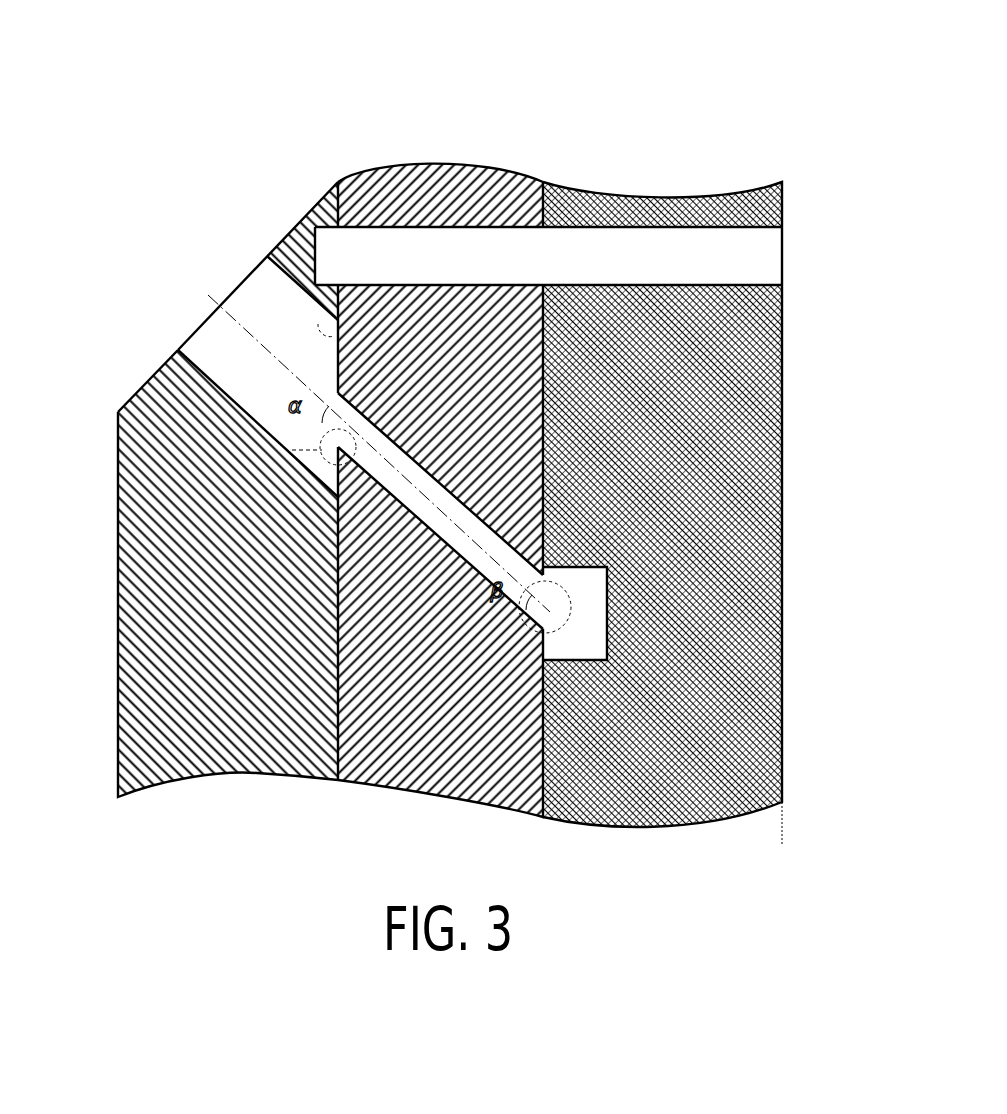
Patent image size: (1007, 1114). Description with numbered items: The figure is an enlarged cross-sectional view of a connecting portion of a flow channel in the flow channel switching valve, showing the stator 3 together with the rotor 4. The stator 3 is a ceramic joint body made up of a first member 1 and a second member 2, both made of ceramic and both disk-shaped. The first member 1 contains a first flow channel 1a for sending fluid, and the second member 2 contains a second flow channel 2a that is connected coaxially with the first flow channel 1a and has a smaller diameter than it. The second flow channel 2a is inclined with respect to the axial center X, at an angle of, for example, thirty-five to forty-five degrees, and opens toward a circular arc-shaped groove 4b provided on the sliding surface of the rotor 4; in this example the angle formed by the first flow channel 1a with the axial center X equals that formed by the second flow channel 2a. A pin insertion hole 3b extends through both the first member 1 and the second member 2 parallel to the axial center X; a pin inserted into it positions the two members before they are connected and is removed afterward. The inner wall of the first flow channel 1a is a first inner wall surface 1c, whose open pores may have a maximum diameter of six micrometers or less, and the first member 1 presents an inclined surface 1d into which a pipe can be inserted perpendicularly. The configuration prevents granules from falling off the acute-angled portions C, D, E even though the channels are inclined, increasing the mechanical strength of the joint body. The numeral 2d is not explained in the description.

The first member 1 is at (331, 189).
The first flow channel 1a is at (222, 300).
The first inner wall surface 1c is at (200, 364).
The inclined surface 1d is at (148, 381).
The second member 2 is at (438, 213).
The second flow channel 2a is at (462, 517).
The passage wall of second member 2d is at (398, 445).
The stator 3 is at (468, 46).
The pin insertion hole 3b is at (713, 270).
The rotor 4 is at (655, 210).
The circular arc-shaped groove 4b is at (590, 640).
The acute-angled portion C is at (318, 322).
The acute-angled portion D is at (330, 455).
The acute-angled portion E is at (572, 578).
The axial center X is at (560, 610).